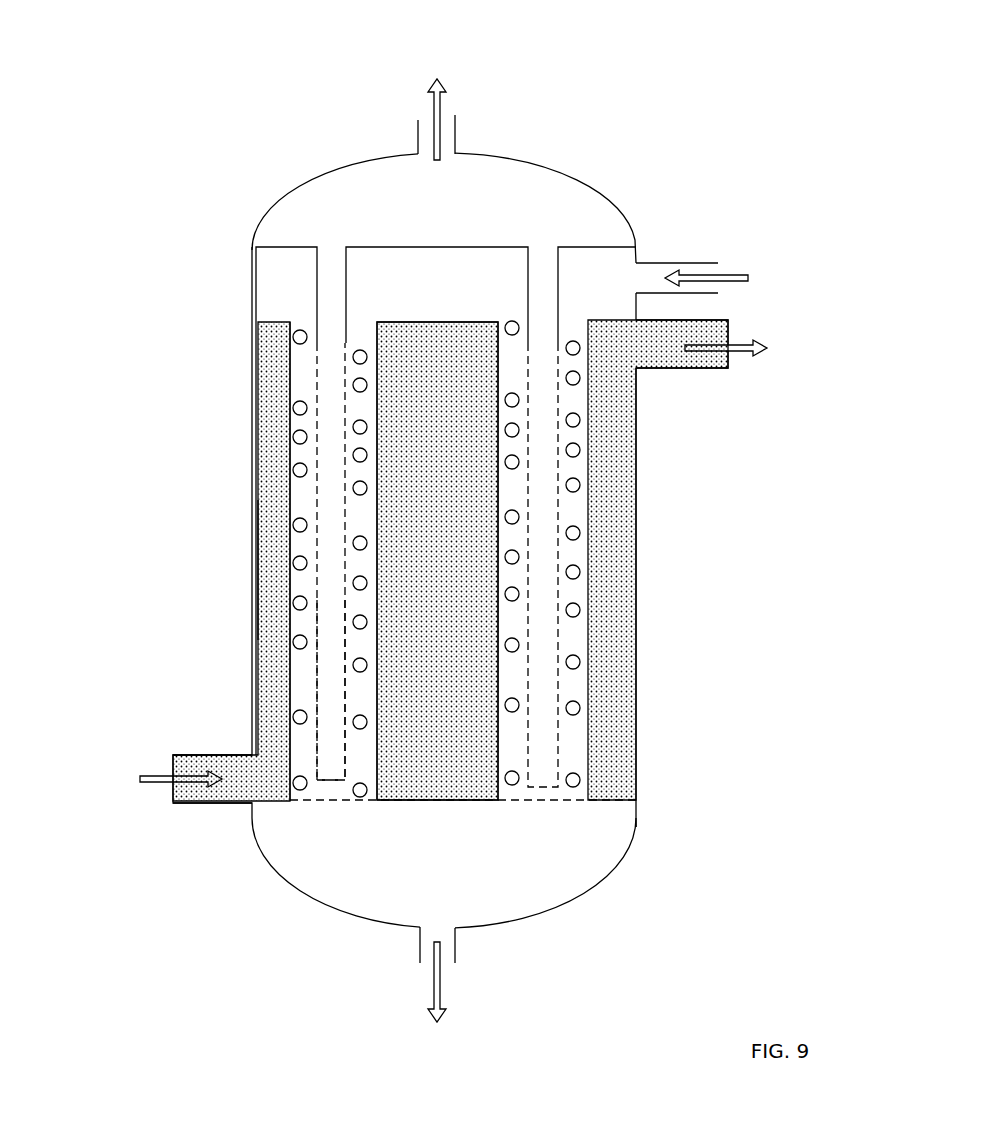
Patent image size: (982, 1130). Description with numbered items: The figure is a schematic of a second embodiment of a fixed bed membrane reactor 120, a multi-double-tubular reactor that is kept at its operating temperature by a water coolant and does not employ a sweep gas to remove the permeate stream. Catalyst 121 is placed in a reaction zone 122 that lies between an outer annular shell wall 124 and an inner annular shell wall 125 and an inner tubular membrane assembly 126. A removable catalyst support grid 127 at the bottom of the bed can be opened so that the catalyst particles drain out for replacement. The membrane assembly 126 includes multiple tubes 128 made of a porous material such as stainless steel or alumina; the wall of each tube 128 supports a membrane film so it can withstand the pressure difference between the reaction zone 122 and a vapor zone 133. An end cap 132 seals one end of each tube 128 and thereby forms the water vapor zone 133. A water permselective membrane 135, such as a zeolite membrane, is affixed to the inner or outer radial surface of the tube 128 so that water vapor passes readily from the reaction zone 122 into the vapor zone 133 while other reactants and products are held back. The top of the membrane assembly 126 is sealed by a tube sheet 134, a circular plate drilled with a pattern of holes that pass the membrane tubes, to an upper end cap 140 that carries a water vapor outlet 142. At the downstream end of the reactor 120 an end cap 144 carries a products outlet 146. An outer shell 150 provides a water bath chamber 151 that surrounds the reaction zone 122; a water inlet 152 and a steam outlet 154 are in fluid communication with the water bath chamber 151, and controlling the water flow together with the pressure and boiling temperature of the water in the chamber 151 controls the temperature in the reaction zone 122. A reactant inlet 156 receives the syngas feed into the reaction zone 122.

The fixed bed membrane reactor 120 is at (688, 113).
The catalyst 121 is at (298, 566).
The reaction zone 122 is at (297, 623).
The outer annular shell wall 124 is at (293, 380).
The inner annular shell wall 125 is at (377, 397).
The inner tubular membrane assembly 126 is at (472, 245).
The removable catalyst support grid 127 is at (348, 801).
The tube 128 is at (346, 288).
The end cap 132 is at (332, 785).
The vapor zone 133 is at (323, 675).
The tube sheet 134 is at (276, 246).
The water permselective membrane 135 is at (315, 695).
The upper end cap 140 is at (582, 178).
The water vapor outlet 142 is at (455, 116).
The end cap 144 is at (550, 913).
The products outlet 146 is at (417, 950).
The outer shell 150 is at (638, 731).
The water bath chamber 151 is at (275, 515).
The water inlet 152 is at (217, 807).
The steam outlet 154 is at (688, 369).
The reactant inlet 156 is at (686, 262).